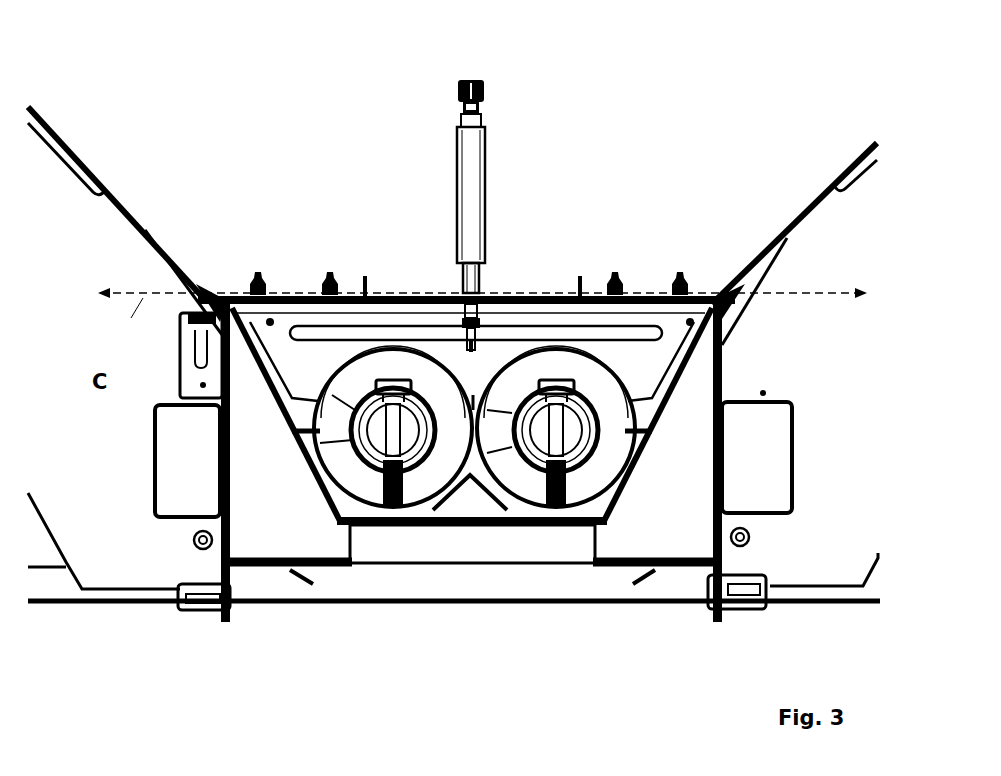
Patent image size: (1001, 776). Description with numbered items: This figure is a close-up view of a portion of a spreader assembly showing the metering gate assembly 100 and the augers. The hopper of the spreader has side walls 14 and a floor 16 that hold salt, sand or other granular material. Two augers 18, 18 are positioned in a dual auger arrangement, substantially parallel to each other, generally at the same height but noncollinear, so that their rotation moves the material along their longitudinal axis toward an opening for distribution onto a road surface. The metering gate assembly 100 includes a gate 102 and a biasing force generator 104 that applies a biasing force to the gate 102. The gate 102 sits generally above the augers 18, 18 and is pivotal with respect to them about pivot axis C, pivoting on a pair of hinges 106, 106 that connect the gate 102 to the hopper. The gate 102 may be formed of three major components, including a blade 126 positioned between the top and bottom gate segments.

The side walls 14 is at (117, 195).
The metering gate assembly 100 is at (320, 195).
The gate 102 is at (765, 291).
The biasing force generator 104 is at (487, 183).
The hinges 106 is at (330, 290).
The blade 126 is at (668, 425).
The floor 16 is at (323, 503).
The augers 18 is at (425, 530).